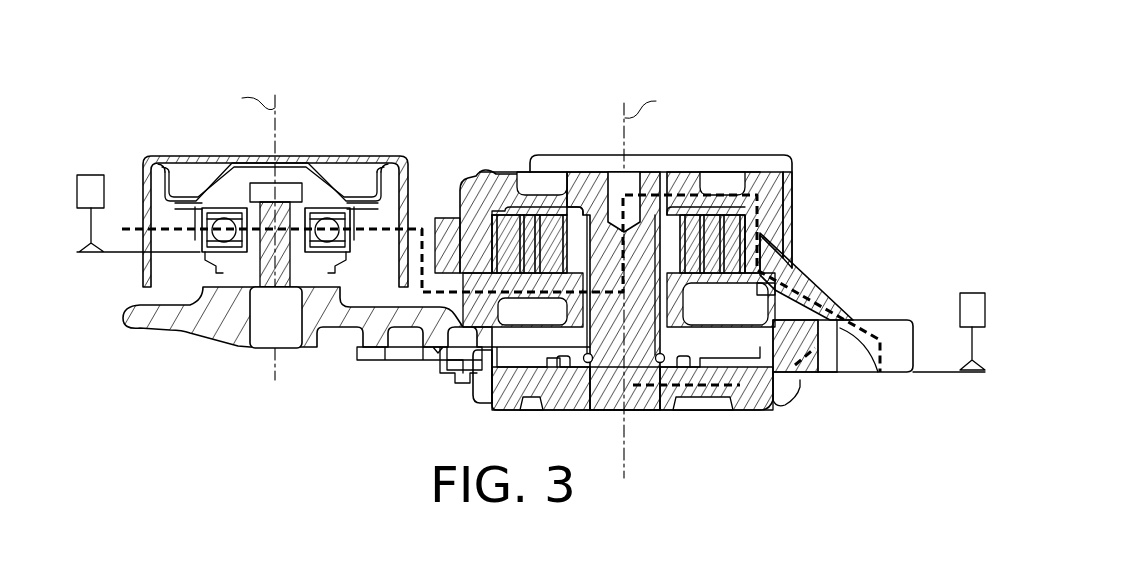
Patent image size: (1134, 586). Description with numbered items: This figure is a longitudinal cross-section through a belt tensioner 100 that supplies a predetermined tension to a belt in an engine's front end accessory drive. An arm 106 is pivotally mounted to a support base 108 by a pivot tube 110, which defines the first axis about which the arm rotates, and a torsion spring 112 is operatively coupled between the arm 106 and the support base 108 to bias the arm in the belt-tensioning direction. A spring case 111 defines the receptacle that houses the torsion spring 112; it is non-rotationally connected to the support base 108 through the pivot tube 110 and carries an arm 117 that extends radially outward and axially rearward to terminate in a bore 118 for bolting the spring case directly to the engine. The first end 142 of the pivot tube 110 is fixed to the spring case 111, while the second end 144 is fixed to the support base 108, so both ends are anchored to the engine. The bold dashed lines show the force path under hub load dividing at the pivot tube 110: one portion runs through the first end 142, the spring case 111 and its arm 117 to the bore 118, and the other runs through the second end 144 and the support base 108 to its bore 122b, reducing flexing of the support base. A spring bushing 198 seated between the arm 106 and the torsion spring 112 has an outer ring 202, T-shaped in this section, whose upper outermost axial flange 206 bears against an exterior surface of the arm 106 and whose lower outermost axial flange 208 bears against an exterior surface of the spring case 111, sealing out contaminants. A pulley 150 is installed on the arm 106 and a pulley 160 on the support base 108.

The belt tensioner 100 is at (768, 93).
The arm 106 is at (372, 322).
The support base 108 is at (742, 398).
The pivot tube 110 is at (622, 290).
The spring case 111 is at (493, 174).
The torsion spring 112 is at (503, 238).
The arm of the spring case 117 is at (812, 272).
The bore 118 is at (898, 322).
The bore 122b is at (800, 383).
The first end of the pivot tube 142 is at (600, 177).
The second end of the pivot tube 144 is at (638, 397).
The pulley 150 is at (148, 277).
The pulley 160 is at (790, 175).
The spring bushing 198 is at (478, 332).
The outer ring 202 is at (825, 371).
The upper outermost axial flange 206 is at (768, 283).
The lower outermost axial flange 208 is at (772, 289).